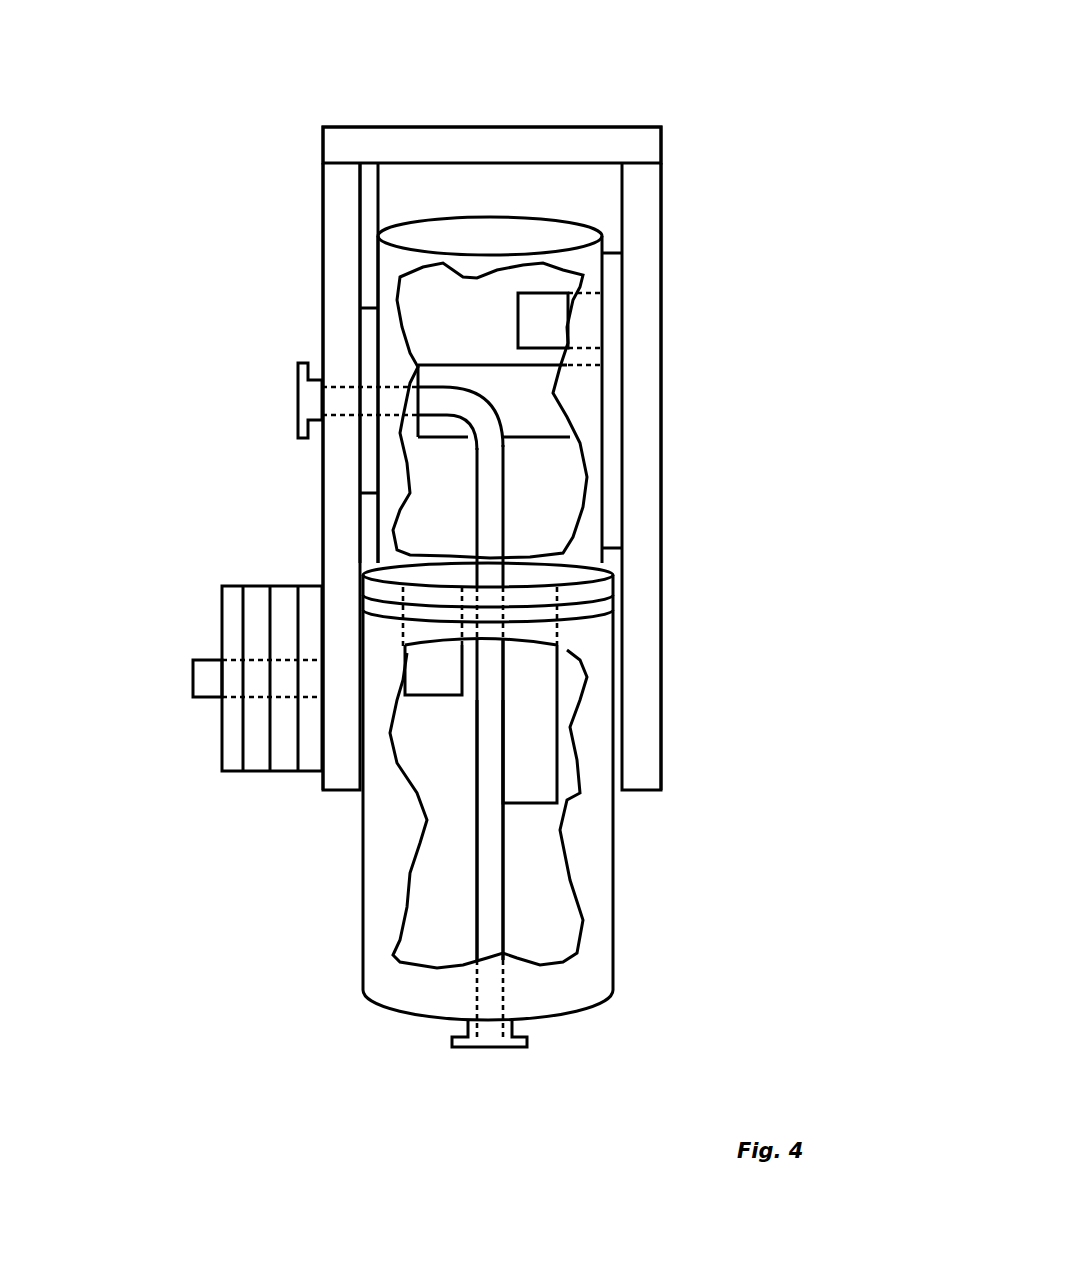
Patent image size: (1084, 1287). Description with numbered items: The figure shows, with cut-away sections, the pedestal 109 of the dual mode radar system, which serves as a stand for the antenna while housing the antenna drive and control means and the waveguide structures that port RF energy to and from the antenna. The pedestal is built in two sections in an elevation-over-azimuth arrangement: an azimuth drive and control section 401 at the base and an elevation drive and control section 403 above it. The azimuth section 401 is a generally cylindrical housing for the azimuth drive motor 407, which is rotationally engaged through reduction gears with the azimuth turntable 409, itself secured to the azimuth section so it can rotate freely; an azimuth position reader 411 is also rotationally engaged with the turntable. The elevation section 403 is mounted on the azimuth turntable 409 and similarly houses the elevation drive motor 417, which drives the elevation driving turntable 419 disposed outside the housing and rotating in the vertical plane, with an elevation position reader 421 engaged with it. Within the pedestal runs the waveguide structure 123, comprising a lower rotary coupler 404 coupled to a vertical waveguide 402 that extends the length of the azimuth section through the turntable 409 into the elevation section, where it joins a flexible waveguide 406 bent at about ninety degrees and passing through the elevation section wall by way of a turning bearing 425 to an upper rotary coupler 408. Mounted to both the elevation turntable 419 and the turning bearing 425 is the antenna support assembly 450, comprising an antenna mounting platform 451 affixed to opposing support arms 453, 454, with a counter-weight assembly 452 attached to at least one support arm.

The pedestal 109 is at (740, 125).
The waveguide structure 123 is at (492, 855).
The azimuth drive and control section 401 is at (362, 918).
The vertical waveguide 402 is at (492, 823).
The elevation drive and control section 403 is at (400, 262).
The lower rotary coupler 404 is at (482, 1035).
The flexible waveguide 406 is at (447, 413).
The azimuth drive motor 407 is at (533, 690).
The upper rotary coupler 408 is at (300, 402).
The azimuth turntable 409 is at (370, 572).
The azimuth position reader 411 is at (423, 685).
The elevation drive motor 417 is at (510, 397).
The elevation driving turntable 419 is at (613, 305).
The elevation position reader 421 is at (540, 323).
The turning bearing 425 is at (373, 360).
The antenna support assembly 450 is at (318, 148).
The antenna mounting platform 451 is at (520, 128).
The counter-weight assembly 452 is at (195, 667).
The support arm 453 is at (640, 395).
The support arm 454 is at (332, 305).